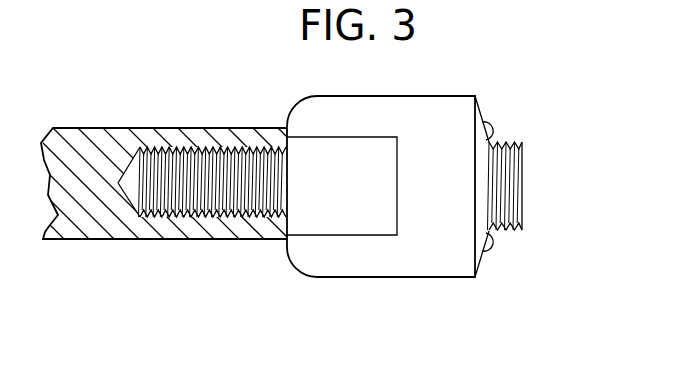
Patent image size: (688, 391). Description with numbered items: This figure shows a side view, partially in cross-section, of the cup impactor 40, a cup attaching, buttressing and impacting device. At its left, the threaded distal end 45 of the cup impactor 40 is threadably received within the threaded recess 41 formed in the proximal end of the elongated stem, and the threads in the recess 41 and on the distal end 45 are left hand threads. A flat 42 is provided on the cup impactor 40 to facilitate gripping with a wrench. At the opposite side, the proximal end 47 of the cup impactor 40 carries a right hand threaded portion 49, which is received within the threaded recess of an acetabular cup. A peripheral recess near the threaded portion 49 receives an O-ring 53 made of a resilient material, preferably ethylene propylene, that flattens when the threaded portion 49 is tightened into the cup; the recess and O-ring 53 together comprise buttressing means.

The cup impactor 40 is at (380, 278).
The threaded recess 41 is at (172, 212).
The flat 42 is at (323, 218).
The threaded distal end 45 is at (205, 175).
The proximal end 47 is at (507, 257).
The threaded portion 49 is at (518, 187).
The O-ring 53 is at (495, 132).